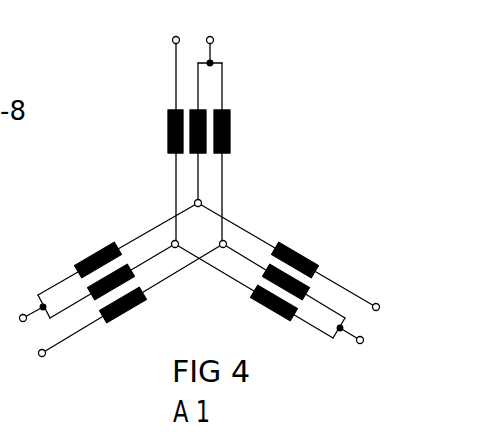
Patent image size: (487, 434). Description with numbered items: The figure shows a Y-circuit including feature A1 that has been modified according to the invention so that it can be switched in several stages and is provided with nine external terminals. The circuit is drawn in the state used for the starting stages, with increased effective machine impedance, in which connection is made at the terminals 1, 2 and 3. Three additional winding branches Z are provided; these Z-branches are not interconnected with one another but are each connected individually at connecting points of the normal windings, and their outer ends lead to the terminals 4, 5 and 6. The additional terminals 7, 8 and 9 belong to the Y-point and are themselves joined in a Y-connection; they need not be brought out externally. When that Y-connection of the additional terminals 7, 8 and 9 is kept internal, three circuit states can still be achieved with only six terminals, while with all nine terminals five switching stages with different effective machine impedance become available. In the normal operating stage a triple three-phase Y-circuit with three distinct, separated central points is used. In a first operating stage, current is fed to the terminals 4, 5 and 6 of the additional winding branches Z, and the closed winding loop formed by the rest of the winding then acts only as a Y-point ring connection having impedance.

The terminal 1 is at (213, 37).
The terminal 2 is at (362, 343).
The terminal 3 is at (17, 305).
The terminal 4 is at (173, 37).
The terminal 5 is at (376, 303).
The terminal 6 is at (40, 356).
The additional terminal 7 is at (200, 207).
The additional terminal 8 is at (176, 248).
The additional terminal 9 is at (222, 248).
The additional winding branch Z is at (168, 136).